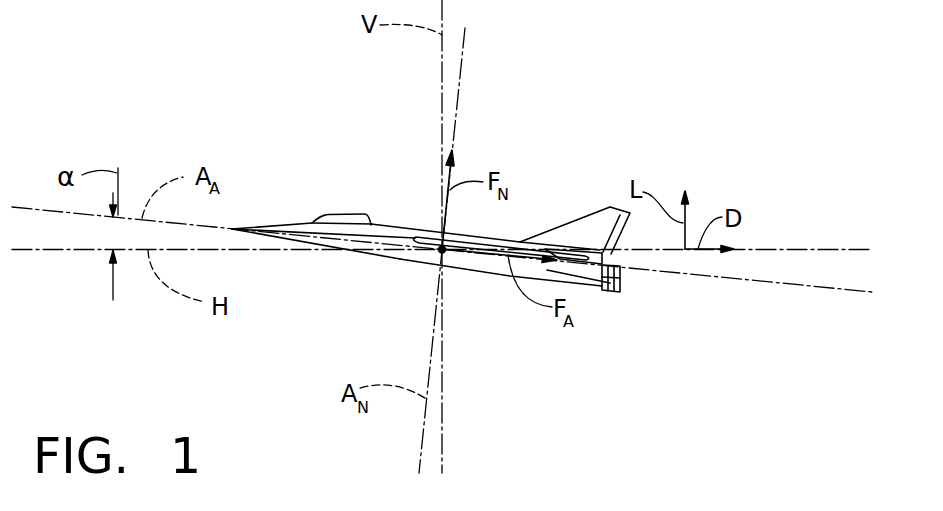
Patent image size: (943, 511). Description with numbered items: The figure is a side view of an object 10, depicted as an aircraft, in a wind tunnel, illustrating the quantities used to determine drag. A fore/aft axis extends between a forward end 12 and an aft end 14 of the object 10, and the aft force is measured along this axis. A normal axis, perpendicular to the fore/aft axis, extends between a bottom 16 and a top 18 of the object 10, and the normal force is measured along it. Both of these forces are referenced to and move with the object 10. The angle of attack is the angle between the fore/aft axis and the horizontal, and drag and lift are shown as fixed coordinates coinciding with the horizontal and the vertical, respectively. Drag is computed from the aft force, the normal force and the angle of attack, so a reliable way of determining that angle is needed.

The object 10 is at (453, 252).
The forward end 12 is at (232, 231).
The aft end 14 is at (620, 275).
The bottom 16 is at (452, 273).
The top 18 is at (432, 222).